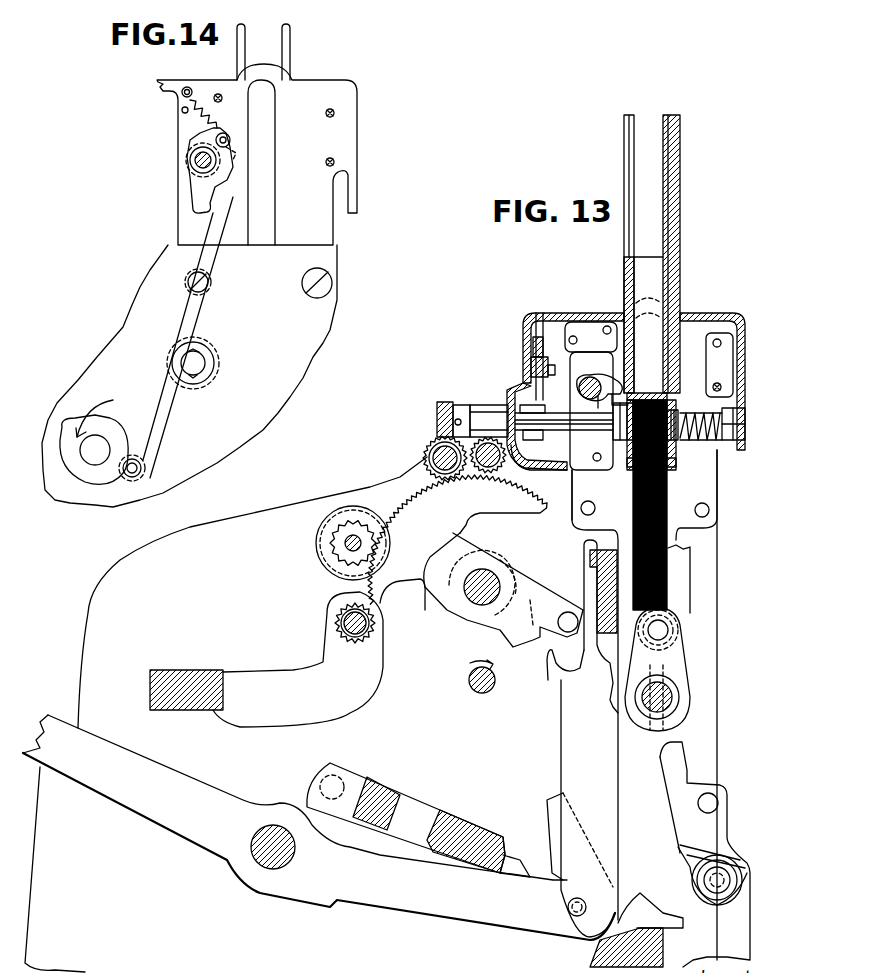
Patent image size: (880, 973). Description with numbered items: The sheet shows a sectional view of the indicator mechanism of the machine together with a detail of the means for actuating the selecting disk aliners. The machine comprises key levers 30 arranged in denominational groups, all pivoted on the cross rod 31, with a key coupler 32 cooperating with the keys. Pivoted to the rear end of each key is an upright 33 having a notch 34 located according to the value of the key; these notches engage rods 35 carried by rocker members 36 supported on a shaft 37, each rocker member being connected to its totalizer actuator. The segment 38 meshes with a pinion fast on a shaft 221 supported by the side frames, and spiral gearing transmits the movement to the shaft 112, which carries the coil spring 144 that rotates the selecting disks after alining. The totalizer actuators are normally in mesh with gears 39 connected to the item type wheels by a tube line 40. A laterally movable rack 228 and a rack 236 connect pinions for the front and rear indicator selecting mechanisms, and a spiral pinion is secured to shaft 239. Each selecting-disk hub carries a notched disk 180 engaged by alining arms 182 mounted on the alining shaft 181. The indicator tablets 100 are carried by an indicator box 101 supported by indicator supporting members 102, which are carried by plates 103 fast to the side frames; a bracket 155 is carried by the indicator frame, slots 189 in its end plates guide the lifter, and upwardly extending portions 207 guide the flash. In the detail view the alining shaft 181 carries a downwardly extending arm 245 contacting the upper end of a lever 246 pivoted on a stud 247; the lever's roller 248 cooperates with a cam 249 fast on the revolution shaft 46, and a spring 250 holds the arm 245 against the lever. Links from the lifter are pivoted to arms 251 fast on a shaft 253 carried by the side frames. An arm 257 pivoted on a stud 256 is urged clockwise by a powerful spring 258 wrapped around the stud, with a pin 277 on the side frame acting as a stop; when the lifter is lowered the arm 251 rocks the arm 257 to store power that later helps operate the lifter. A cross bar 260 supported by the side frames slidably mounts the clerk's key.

In FIG. 13, the key lever 30 is at (183, 781).
In FIG. 13, the cross rod 31 is at (277, 873).
In FIG. 13, the key coupler 32 is at (462, 820).
In FIG. 13, the upright 33 is at (612, 770).
In FIG. 13, the notch 34 is at (580, 668).
In FIG. 13, the rod 35 is at (570, 612).
In FIG. 13, the rocker member 36 is at (522, 578).
In FIG. 13, the shaft 37 is at (478, 581).
In FIG. 13, the segment 38 is at (503, 508).
In FIG. 13, the gear 39 is at (362, 637).
In FIG. 13, the tube line 40 is at (337, 637).
In FIG. 14, the revolution shaft 46 is at (99, 448).
In FIG. 13, the revolution shaft 46 is at (492, 685).
In FIG. 13, the indicator tablet 100 is at (668, 502).
In FIG. 13, the indicator box 101 is at (669, 352).
In FIG. 13, the indicator supporting member 102 is at (700, 318).
In FIG. 14, the plate 103 is at (328, 86).
In FIG. 13, the plate 103 is at (718, 470).
In FIG. 13, the shaft 112 is at (563, 440).
In FIG. 13, the coil spring 144 is at (684, 437).
In FIG. 13, the bracket 155 is at (612, 470).
In FIG. 13, the notched disk 180 is at (632, 391).
In FIG. 14, the alining shaft 181 is at (190, 166).
In FIG. 13, the alining shaft 181 is at (595, 373).
In FIG. 13, the alining arm 182 is at (597, 378).
In FIG. 14, the slot 189 is at (274, 140).
In FIG. 13, the upwardly extending portion 207 is at (681, 188).
In FIG. 13, the shaft 221 is at (437, 457).
In FIG. 13, the laterally movable rack 228 is at (537, 322).
In FIG. 13, the rack 236 is at (540, 337).
In FIG. 13, the shaft 239 is at (510, 466).
In FIG. 14, the arm 245 is at (198, 190).
In FIG. 14, the lever 246 is at (218, 322).
In FIG. 14, the stud 247 is at (193, 363).
In FIG. 14, the roller 248 is at (142, 470).
In FIG. 14, the cam 249 is at (112, 412).
In FIG. 14, the spring 250 is at (199, 100).
In FIG. 13, the arm 251 is at (673, 660).
In FIG. 13, the shaft 253 is at (668, 708).
In FIG. 13, the stud 256 is at (728, 876).
In FIG. 13, the arm 257 is at (703, 827).
In FIG. 13, the spring 258 is at (737, 886).
In FIG. 13, the cross bar 260 is at (158, 689).
In FIG. 13, the pin 277 is at (716, 797).